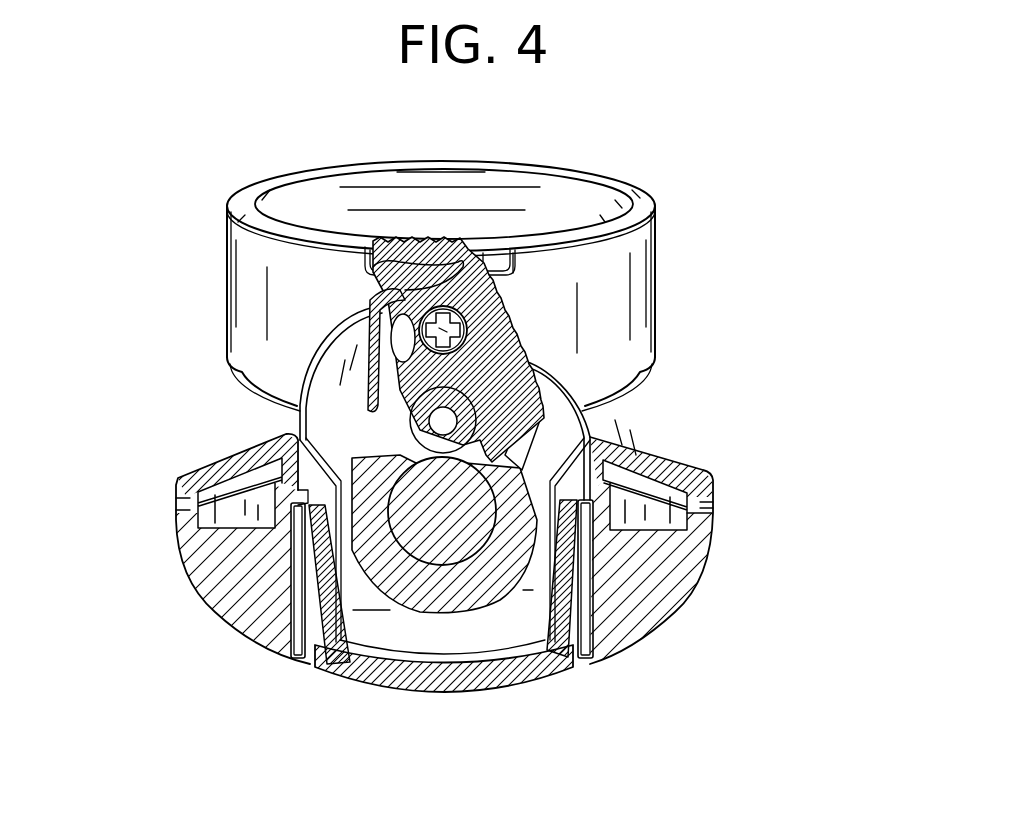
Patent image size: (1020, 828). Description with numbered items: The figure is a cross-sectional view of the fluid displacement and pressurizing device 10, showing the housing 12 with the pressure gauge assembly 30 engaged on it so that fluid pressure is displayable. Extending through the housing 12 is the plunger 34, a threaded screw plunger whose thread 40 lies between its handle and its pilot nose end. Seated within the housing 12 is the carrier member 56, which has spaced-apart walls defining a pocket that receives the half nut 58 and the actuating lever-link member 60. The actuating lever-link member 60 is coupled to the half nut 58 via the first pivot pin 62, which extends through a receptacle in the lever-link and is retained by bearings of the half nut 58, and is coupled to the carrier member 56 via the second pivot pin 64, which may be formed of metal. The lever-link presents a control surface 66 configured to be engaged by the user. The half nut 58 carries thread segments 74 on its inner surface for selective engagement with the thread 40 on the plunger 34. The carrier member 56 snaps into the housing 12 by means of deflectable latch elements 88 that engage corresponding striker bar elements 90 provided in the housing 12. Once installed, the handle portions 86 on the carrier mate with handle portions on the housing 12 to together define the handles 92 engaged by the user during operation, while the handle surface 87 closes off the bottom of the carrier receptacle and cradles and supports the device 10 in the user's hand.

The device 10 is at (640, 150).
The housing 12 is at (663, 603).
The pressure gauge assembly 30 is at (643, 287).
The plunger 34 is at (417, 560).
The thread 40 is at (497, 578).
The carrier member 56 is at (330, 667).
The half nut 58 is at (485, 665).
The actuating lever-link member 60 is at (503, 300).
The first pivot pin 62 is at (403, 313).
The second pivot pin 64 is at (378, 437).
The control surface 66 is at (443, 240).
The thread segments 74 is at (440, 560).
The handle portions 86 is at (205, 468).
The handle surface 87 is at (350, 680).
The deflectable latch elements 88 is at (287, 540).
The striker bar elements 90 is at (593, 457).
The handles 92 is at (172, 534).